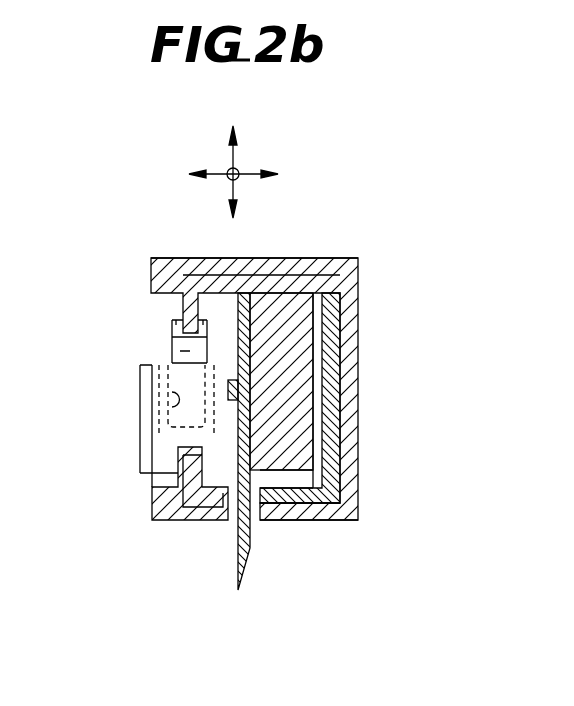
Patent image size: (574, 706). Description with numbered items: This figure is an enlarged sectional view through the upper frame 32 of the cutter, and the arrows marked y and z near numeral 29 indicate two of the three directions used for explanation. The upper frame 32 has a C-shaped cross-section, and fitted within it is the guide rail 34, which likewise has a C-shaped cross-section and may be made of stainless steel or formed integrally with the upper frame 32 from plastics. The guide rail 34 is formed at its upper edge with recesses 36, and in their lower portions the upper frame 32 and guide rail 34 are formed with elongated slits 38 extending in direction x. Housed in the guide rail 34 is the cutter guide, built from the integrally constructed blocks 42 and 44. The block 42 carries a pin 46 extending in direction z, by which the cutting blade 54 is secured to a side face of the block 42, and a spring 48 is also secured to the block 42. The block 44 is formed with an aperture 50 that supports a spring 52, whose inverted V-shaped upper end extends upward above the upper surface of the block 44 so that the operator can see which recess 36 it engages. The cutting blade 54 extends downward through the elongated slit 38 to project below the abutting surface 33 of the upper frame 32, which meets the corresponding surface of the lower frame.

The coordinate system 29 is at (233, 158).
The upper frame 32 is at (303, 265).
The abutting surface 33 is at (327, 520).
The guide rail 34 is at (210, 283).
The recesses 36 is at (173, 323).
The elongated slits 38 is at (253, 508).
The block 42 is at (300, 333).
The block 44 is at (140, 453).
The pin 46 is at (250, 388).
The spring 48 is at (298, 478).
The aperture 50 is at (172, 400).
The spring 52 is at (172, 341).
The cutting blade 54 is at (250, 437).